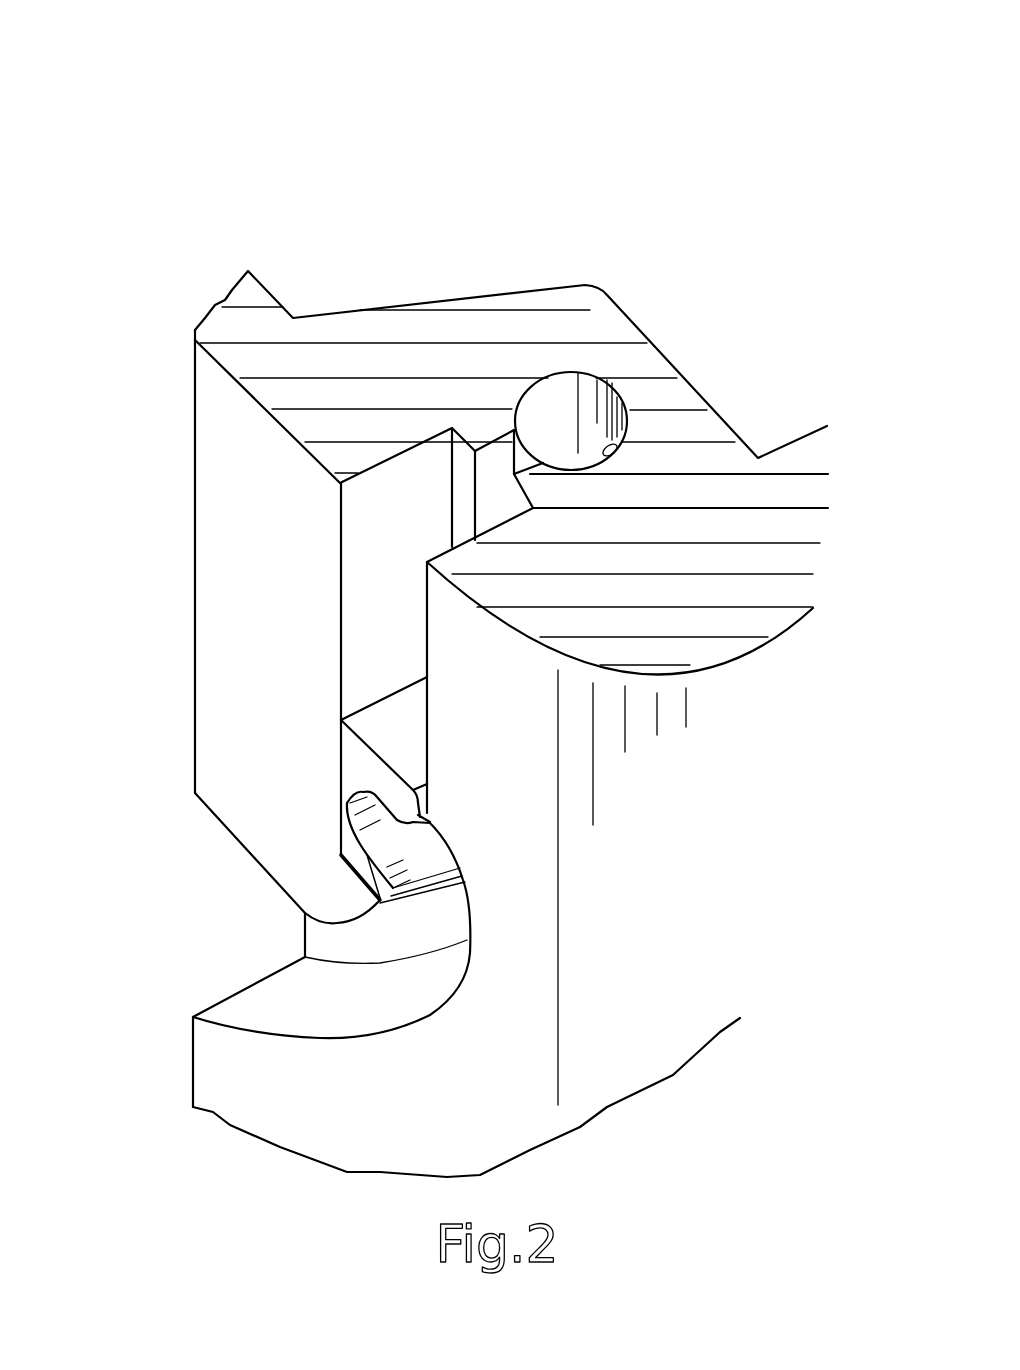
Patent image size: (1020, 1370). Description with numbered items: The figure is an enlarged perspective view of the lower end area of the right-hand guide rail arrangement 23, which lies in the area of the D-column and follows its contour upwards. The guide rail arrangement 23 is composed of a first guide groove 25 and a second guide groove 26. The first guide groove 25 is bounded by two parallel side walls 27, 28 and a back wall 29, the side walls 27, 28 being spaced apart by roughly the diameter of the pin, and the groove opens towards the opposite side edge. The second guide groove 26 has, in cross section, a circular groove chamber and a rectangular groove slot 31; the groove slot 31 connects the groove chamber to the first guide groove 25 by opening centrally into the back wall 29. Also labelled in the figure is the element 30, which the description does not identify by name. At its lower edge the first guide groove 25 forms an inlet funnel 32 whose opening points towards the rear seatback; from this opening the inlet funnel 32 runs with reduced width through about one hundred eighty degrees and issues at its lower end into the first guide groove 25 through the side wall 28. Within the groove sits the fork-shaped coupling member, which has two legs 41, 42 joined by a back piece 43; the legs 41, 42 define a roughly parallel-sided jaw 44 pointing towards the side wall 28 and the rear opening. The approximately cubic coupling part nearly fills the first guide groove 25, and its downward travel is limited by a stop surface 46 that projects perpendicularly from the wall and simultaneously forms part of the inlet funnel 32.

The guide rail arrangement 23 is at (325, 210).
The first guide groove 25 is at (403, 518).
The second guide groove 26 is at (583, 412).
The side wall 27 is at (355, 628).
The side wall 28 is at (453, 537).
The back wall 29 is at (452, 428).
The support block 30 is at (620, 460).
The groove slot 31 is at (500, 450).
The inlet funnel 32 is at (233, 943).
The leg 41 is at (339, 855).
The leg 42 is at (393, 795).
The back piece 43 is at (352, 778).
The jaw 44 is at (383, 833).
The stop surface 46 is at (352, 890).